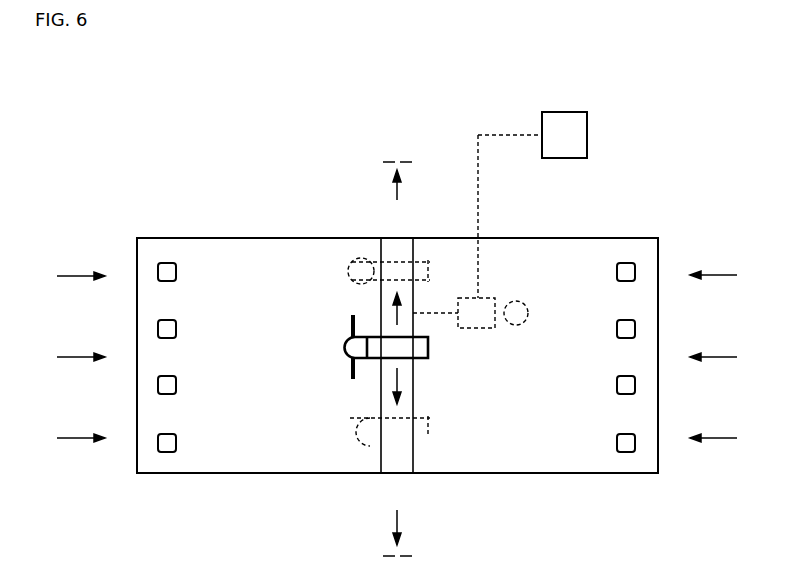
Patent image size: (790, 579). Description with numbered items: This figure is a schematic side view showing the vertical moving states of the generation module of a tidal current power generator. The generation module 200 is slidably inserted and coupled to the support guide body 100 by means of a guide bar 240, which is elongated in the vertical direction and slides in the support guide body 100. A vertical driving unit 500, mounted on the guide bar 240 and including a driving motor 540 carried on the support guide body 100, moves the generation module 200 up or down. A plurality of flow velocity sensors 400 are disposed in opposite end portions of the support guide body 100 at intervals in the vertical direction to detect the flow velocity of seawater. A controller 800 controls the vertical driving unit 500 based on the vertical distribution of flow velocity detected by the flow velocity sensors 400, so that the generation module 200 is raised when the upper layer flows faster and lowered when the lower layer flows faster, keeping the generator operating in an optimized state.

The support guide body 100 is at (591, 238).
The generation module 200 is at (430, 358).
The guide bar 240 is at (374, 258).
The flow velocity sensor 400 is at (165, 262).
The vertical driving unit 500 is at (494, 335).
The driving motor 540 is at (495, 330).
The controller 800 is at (587, 112).